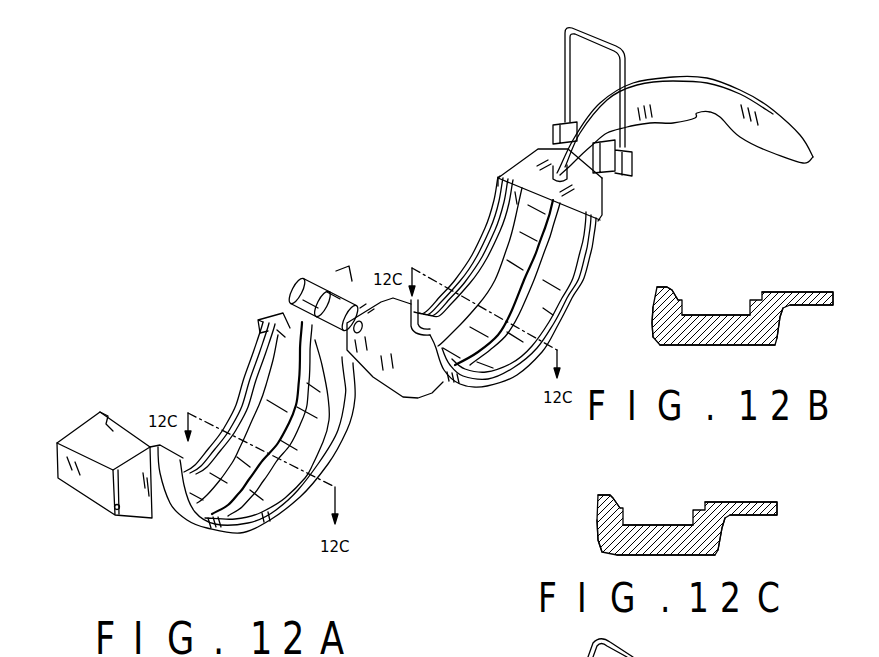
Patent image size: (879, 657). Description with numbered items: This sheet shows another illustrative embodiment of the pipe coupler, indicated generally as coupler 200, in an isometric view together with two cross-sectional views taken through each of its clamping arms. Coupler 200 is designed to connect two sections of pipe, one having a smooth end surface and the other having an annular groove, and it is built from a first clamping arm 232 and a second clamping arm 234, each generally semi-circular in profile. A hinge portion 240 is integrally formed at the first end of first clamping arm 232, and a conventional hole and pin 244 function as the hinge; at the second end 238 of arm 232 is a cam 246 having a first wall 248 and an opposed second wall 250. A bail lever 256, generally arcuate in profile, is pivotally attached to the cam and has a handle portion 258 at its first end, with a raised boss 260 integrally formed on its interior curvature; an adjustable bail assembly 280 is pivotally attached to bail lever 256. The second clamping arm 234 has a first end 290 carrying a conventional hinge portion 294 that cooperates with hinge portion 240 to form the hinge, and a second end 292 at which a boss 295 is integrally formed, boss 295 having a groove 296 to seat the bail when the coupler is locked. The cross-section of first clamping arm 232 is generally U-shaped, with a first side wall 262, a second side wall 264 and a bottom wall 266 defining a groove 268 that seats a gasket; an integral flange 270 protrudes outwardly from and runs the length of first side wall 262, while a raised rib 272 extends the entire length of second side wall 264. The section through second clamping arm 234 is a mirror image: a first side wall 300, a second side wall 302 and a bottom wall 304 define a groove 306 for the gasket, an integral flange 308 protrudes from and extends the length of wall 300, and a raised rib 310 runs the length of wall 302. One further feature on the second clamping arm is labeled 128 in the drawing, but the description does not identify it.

In FIG. 12A, the coupler 200 is at (455, 222).
In FIG. 12A, the flange of ring segment 128 is at (233, 400).
In FIG. 12A, the first clamping arm 232 is at (595, 244).
In FIG. 12B, the first clamping arm 232 is at (655, 349).
In FIG. 12A, the second clamping arm 234 is at (180, 527).
In FIG. 12C, the second clamping arm 234 is at (721, 557).
In FIG. 12A, the second end 238 is at (518, 172).
In FIG. 12A, the hinge portion 240 is at (293, 278).
In FIG. 12A, the hole and pin 244 is at (358, 321).
In FIG. 12A, the cam 246 is at (598, 186).
In FIG. 12A, the first wall 248 is at (603, 213).
In FIG. 12A, the second wall 250 is at (552, 150).
In FIG. 12A, the bail lever 256 is at (408, 372).
In FIG. 12A, the handle portion 258 is at (776, 135).
In FIG. 12A, the raised boss 260 is at (681, 125).
In FIG. 12B, the first side wall 262 is at (780, 330).
In FIG. 12B, the second side wall 264 is at (653, 335).
In FIG. 12B, the bottom wall 266 is at (720, 347).
In FIG. 12B, the groove 268 is at (708, 305).
In FIG. 12A, the flange 270 is at (537, 300).
In FIG. 12B, the flange 270 is at (780, 292).
In FIG. 12B, the raised rib 272 is at (653, 292).
In FIG. 12A, the adjustable bail assembly 280 is at (605, 31).
In FIG. 12C, the adjustable bail assembly 280 is at (630, 642).
In FIG. 12A, the first end 290 is at (246, 318).
In FIG. 12A, the second end 292 is at (72, 418).
In FIG. 12A, the hinge portion 294 is at (300, 287).
In FIG. 12A, the boss 295 is at (73, 472).
In FIG. 12A, the groove 296 is at (117, 513).
In FIG. 12C, the first side wall 300 is at (720, 538).
In FIG. 12C, the second side wall 302 is at (597, 525).
In FIG. 12C, the bottom wall 304 is at (613, 555).
In FIG. 12C, the groove 306 is at (653, 515).
In FIG. 12C, the flange 308 is at (743, 502).
In FIG. 12C, the raised rib 310 is at (597, 500).